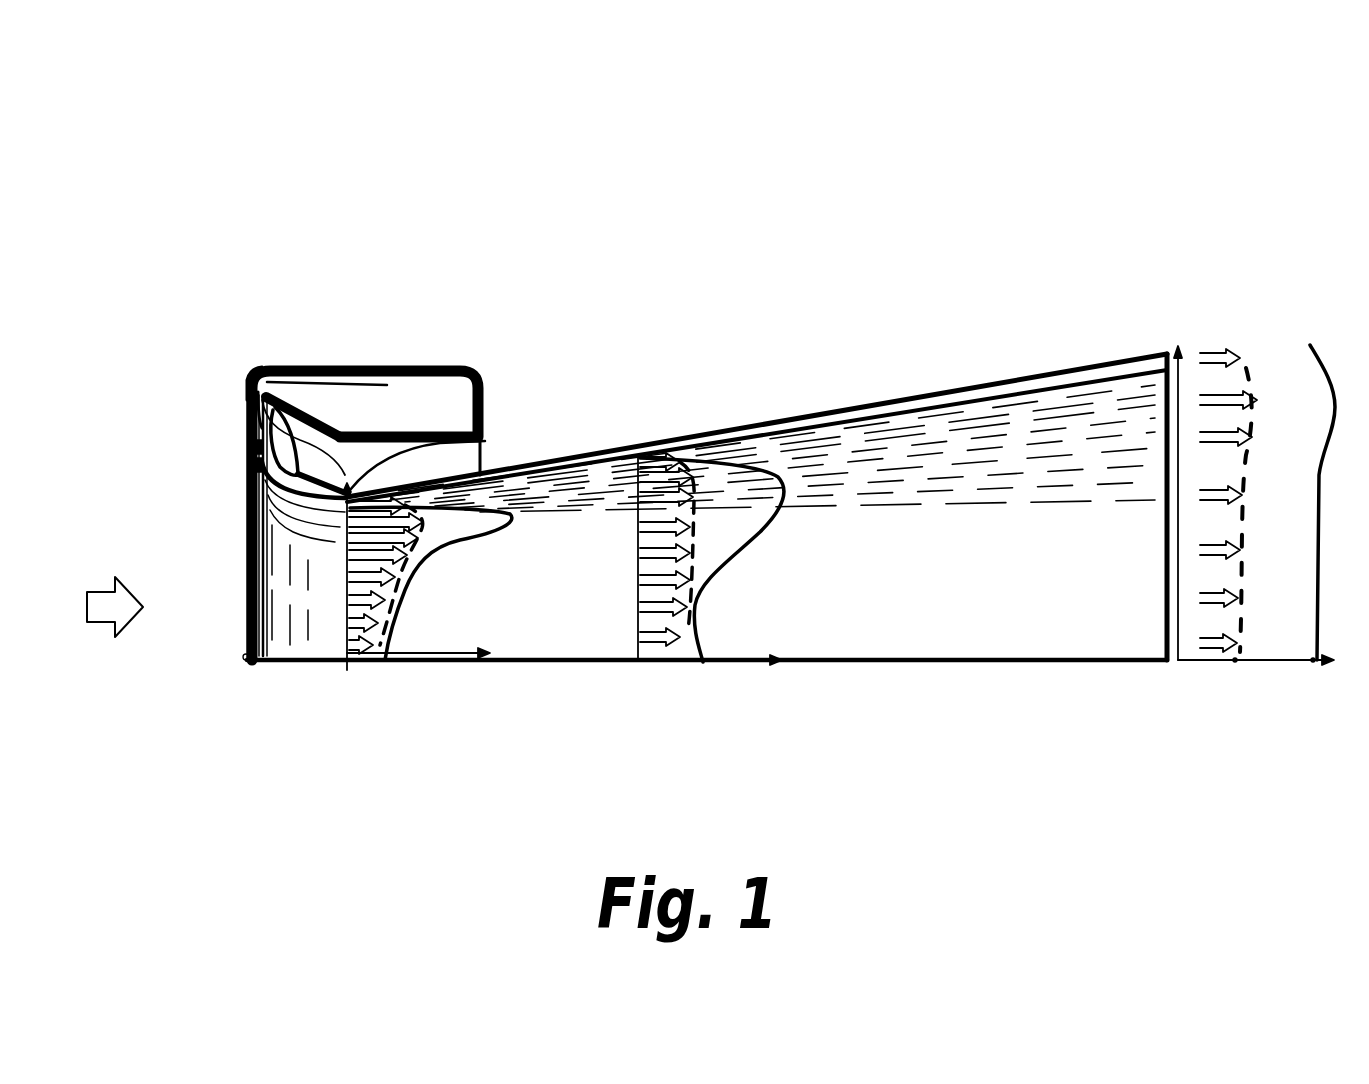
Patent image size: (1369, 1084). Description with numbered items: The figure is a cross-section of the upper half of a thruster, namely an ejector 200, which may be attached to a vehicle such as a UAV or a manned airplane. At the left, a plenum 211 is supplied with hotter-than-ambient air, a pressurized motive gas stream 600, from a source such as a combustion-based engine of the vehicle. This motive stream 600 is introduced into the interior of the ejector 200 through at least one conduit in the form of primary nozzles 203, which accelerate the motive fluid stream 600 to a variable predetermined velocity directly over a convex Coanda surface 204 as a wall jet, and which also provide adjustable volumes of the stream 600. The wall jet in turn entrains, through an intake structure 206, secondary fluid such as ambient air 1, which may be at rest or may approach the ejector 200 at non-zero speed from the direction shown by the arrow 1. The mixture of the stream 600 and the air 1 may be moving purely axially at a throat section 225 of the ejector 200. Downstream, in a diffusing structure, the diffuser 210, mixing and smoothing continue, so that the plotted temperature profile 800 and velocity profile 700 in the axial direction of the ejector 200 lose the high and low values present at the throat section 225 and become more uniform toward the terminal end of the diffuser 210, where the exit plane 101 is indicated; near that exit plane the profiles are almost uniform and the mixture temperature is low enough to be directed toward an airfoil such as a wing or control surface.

The ambient air 1 is at (105, 601).
The outlet plane 101 is at (1162, 664).
The ejector 200 is at (421, 181).
The primary nozzles 203 is at (247, 435).
The convex Coanda surface 204 is at (245, 385).
The intake structure 206 is at (247, 392).
The diffuser 210 is at (507, 478).
The plenum 211 is at (437, 413).
The throat section 225 is at (485, 456).
The pressurized motive gas stream 600 is at (302, 393).
The velocity profile 700 is at (392, 605).
The temperature profile 800 is at (515, 500).